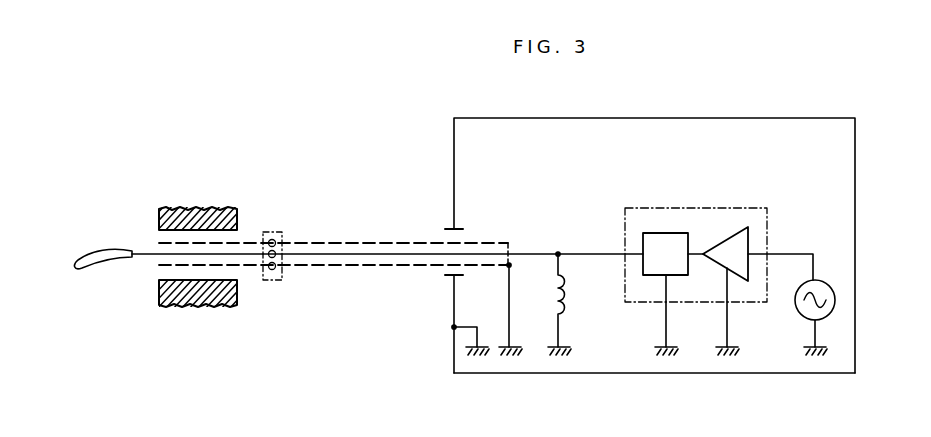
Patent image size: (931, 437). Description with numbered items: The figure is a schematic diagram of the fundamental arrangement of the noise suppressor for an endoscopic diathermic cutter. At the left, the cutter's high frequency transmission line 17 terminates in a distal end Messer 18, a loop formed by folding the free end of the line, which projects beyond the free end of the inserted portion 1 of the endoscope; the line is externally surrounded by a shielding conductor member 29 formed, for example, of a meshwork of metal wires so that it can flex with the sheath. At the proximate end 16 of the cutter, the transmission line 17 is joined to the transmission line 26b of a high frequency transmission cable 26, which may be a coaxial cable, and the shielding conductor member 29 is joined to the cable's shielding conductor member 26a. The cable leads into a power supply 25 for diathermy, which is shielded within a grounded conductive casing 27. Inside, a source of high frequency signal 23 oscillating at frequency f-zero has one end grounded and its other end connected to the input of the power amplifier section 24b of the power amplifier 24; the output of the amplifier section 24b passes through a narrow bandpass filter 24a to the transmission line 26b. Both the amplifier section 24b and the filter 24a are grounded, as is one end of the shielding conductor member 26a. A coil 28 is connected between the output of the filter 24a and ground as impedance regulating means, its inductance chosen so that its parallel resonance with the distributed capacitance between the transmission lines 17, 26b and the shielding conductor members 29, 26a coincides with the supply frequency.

The inserted portion 1 is at (192, 194).
The proximate end 16 is at (281, 232).
The high frequency transmission line 17 is at (161, 253).
The distal end Messer 18 is at (122, 262).
The source of high frequency signal 23 is at (804, 310).
The power amplifier 24 is at (737, 206).
The narrow bandpass filter 24a is at (660, 233).
The power amplifier section 24b is at (727, 247).
The power supply 25 is at (736, 118).
The high frequency transmission cable 26 is at (331, 272).
The shielding conductor member 26a is at (393, 243).
The transmission line 26b is at (299, 252).
The conductive casing 27 is at (785, 374).
The coil 28 is at (568, 302).
The shielding conductor member 29 is at (218, 242).